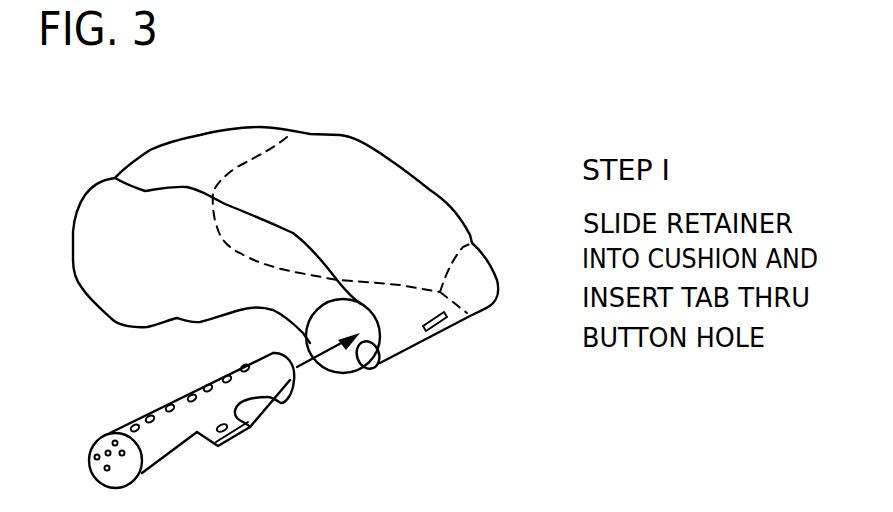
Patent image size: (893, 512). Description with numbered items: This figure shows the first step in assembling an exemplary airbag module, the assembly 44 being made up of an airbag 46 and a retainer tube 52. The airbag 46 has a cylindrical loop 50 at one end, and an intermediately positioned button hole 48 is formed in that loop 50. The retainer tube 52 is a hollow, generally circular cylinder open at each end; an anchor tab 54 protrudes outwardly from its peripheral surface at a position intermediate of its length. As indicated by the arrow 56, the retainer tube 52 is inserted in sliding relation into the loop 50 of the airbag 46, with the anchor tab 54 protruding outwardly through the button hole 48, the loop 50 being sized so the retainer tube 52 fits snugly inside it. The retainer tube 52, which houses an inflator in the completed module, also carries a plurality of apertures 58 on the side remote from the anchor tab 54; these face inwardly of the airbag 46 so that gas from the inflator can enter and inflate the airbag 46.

The assembly 44 is at (378, 408).
The airbag 46 is at (407, 190).
The button hole 48 is at (447, 320).
The cylindrical loop 50 is at (368, 370).
The retainer tube 52 is at (188, 450).
The anchor tab 54 is at (250, 425).
The arrow 56 is at (310, 362).
The apertures 58 is at (192, 397).